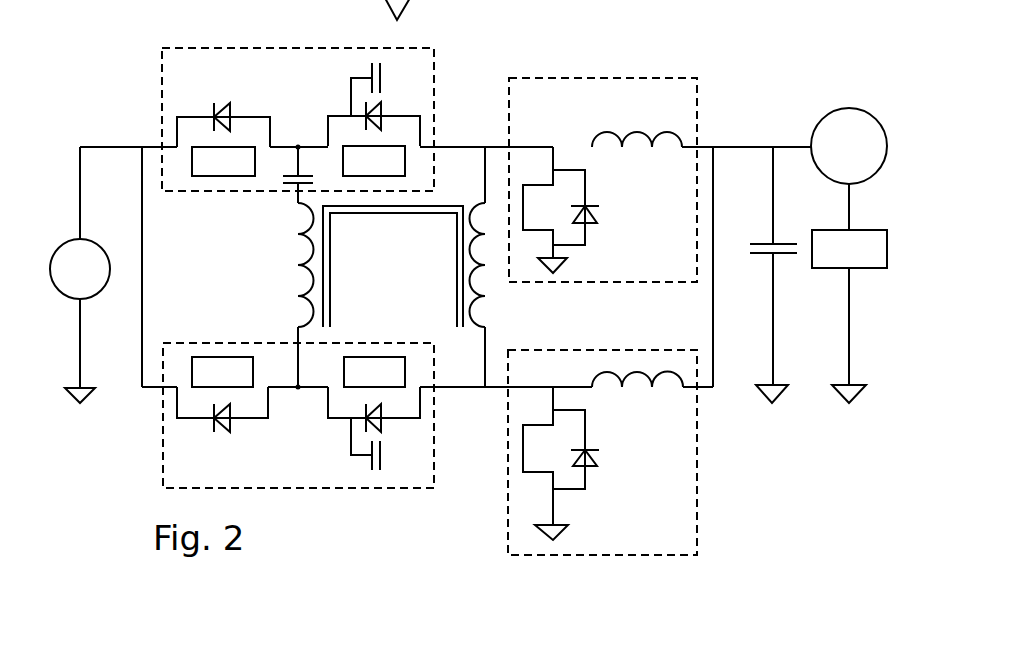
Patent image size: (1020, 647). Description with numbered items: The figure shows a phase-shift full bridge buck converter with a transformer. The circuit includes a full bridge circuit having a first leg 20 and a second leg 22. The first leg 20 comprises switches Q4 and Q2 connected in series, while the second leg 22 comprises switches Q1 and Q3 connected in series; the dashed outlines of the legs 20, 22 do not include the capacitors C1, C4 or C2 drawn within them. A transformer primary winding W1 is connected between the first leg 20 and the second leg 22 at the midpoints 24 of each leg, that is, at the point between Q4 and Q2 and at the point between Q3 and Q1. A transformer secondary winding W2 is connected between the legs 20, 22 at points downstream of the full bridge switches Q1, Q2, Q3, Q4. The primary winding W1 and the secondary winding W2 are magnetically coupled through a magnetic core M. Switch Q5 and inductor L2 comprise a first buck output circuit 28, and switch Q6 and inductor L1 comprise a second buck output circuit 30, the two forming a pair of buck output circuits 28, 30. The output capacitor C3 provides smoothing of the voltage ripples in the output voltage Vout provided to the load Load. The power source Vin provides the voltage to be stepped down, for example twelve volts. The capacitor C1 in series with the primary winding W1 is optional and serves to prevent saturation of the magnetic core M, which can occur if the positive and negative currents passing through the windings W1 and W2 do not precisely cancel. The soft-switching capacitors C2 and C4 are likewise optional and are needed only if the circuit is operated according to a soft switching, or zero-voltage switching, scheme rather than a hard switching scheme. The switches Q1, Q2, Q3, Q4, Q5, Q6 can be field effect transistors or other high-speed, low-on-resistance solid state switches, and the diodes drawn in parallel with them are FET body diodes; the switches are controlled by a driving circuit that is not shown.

The first leg 20 is at (205, 48).
The second leg 22 is at (297, 489).
The midpoint 24 is at (298, 147).
The first buck output circuit 28 is at (598, 78).
The second buck output circuit 30 is at (697, 487).
The switch Q1 is at (222, 394).
The switch Q2 is at (374, 139).
The switch Q3 is at (374, 394).
The switch Q4 is at (223, 139).
The switch Q5 is at (561, 210).
The switch Q6 is at (561, 463).
The capacitor C1 is at (290, 182).
The soft-switching capacitor C2 is at (367, 458).
The output capacitor C3 is at (757, 256).
The soft-switching capacitor C4 is at (372, 74).
The transformer primary winding W1 is at (298, 270).
The transformer secondary winding W2 is at (478, 300).
The magnetic core M is at (378, 214).
The inductor L1 is at (633, 375).
The inductor L2 is at (633, 134).
The power source Vin is at (80, 275).
The output voltage Vout is at (849, 146).
The load Load is at (849, 293).